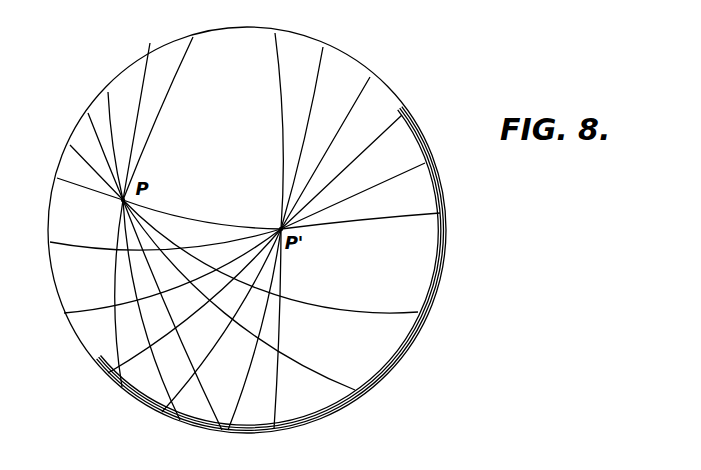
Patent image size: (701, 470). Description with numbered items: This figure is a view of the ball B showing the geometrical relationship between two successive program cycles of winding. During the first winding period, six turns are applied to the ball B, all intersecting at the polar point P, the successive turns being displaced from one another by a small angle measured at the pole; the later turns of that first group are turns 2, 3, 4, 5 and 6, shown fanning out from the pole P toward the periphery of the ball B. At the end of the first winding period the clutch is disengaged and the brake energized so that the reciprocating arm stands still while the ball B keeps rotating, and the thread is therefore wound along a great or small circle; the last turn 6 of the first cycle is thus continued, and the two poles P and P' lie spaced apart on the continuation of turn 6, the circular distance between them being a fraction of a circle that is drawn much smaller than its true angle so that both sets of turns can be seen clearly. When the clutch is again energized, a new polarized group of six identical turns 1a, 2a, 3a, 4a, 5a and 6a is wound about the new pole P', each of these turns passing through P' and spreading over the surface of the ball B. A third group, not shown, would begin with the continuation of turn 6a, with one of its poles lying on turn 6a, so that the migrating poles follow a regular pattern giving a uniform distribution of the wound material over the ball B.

The turn 2 is at (144, 61).
The turn 3 is at (110, 88).
The turn 4 is at (91, 116).
The turn 5 is at (73, 143).
The turn 6 is at (62, 173).
The turn 1a is at (407, 217).
The turn 2a is at (398, 177).
The turn 3a is at (388, 128).
The turn 4a is at (354, 97).
The turn 5a is at (318, 73).
The turn 6a is at (279, 87).
The ball B is at (446, 258).